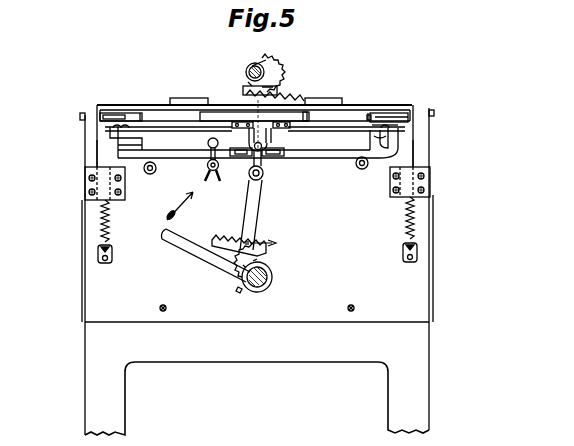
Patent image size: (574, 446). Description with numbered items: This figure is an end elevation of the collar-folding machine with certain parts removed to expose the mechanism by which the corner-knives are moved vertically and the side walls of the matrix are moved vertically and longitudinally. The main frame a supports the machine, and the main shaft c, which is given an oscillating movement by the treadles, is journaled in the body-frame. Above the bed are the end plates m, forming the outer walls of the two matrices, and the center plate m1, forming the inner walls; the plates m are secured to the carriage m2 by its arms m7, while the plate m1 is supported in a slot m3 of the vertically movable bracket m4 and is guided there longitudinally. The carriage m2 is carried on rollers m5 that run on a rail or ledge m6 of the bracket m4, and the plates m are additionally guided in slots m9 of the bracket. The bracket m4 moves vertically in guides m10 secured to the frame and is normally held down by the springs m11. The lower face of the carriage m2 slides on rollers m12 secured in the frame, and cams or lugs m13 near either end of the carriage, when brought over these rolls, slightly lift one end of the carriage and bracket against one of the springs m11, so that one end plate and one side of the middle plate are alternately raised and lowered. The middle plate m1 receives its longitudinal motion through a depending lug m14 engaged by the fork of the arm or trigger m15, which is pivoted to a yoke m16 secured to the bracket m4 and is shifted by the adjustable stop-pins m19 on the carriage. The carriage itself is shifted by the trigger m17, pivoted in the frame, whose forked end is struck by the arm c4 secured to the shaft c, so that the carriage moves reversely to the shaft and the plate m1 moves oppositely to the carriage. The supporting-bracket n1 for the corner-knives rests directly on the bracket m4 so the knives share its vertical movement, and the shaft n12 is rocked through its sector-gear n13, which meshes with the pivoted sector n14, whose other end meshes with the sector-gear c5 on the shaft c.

The main frame a is at (125, 398).
The end plate m is at (118, 118).
The center plate m1 is at (222, 117).
The carriage m2 is at (331, 150).
The slot m3 is at (306, 112).
The bracket m4 is at (472, 167).
The rollers m5 is at (393, 128).
The rail or ledge m6 is at (395, 133).
The arms m7 is at (433, 112).
The slots m9 is at (83, 112).
The guides m10 is at (462, 196).
The springs m11 is at (406, 228).
The rollers m12 is at (361, 170).
The cams or lugs m13 is at (150, 174).
The lug m14 is at (290, 157).
The arm or trigger m15 is at (265, 184).
The yoke m16 is at (250, 127).
The trigger m17 is at (208, 146).
The adjustable stop-pins m19 is at (243, 160).
The supporting-bracket n1 is at (358, 84).
The shaft n12 is at (250, 66).
The sector-gear n13 is at (274, 62).
The pivoted sector n14 is at (262, 118).
The main shaft c is at (268, 277).
The arm c4 is at (195, 245).
The sector-gear c5 is at (238, 288).